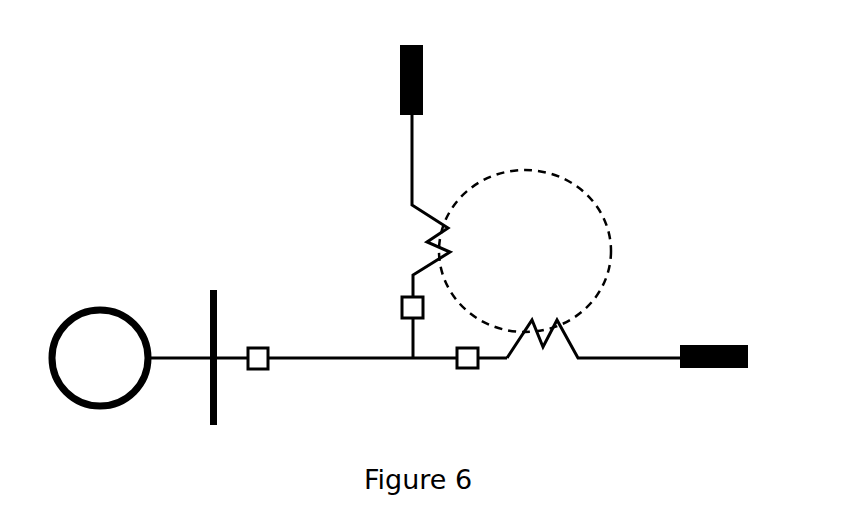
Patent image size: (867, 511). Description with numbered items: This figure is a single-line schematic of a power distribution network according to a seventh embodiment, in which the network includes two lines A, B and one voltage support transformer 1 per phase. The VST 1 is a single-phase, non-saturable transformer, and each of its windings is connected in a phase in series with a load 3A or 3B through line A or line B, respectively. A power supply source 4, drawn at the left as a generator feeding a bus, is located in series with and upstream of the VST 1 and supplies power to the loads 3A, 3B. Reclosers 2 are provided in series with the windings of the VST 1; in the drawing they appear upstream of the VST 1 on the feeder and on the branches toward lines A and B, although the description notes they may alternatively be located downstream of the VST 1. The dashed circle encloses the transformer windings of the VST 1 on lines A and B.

The power supply source 4 is at (100, 358).
The reclosers 2 is at (255, 346).
The load 3A is at (430, 43).
The load 3B is at (708, 343).
The line A is at (406, 146).
The line B is at (656, 353).
The voltage support transformer (VST) 1 is at (525, 251).